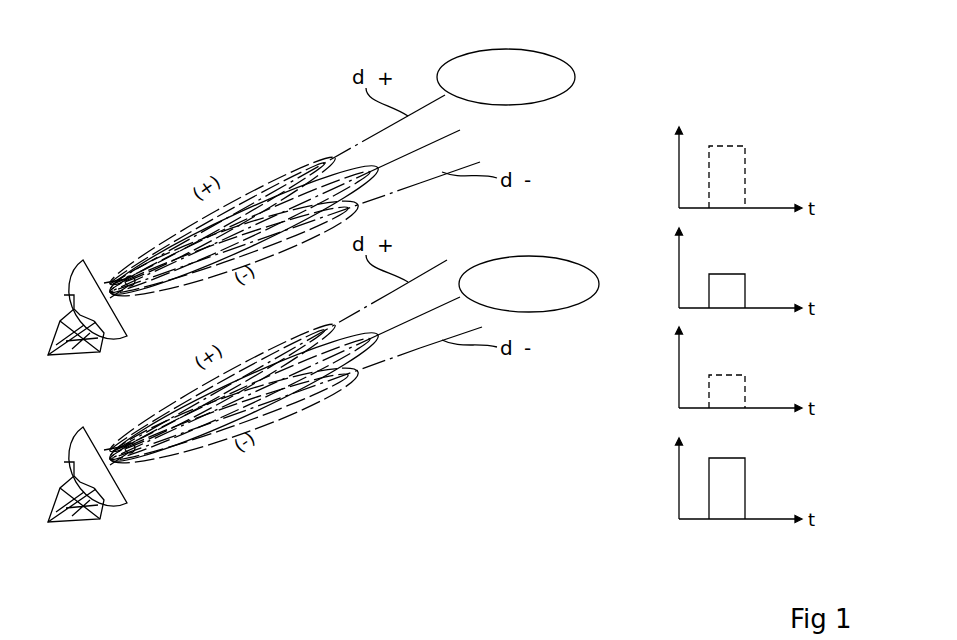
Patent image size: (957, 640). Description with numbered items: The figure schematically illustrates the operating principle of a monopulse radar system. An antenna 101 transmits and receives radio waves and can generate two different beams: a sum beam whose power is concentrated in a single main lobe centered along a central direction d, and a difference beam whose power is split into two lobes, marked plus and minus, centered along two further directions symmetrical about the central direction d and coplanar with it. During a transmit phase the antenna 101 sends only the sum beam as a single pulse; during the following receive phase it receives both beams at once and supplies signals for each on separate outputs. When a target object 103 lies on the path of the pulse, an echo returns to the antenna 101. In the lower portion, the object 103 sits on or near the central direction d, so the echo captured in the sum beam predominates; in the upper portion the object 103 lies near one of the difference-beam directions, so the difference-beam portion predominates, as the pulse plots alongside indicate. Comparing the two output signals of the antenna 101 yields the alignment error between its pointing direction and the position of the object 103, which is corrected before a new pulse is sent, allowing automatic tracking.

The antenna 101 is at (120, 503).
The target object 103 is at (540, 50).
The direction d is at (452, 133).